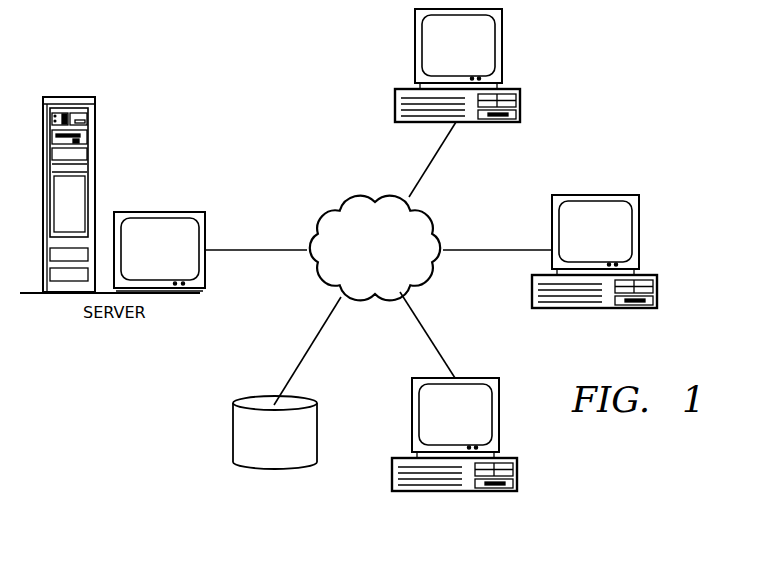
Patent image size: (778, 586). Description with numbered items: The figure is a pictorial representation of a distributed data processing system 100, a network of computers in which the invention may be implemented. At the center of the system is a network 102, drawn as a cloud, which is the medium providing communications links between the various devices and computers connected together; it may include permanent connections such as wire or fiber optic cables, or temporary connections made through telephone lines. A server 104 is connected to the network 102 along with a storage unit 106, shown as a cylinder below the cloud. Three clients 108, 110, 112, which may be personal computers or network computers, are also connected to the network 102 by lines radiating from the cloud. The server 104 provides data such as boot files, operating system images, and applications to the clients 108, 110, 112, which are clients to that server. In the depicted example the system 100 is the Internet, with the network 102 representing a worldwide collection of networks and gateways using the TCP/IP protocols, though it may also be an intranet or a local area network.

The distributed data processing system 100 is at (226, 44).
The network 102 is at (392, 258).
The server 104 is at (160, 211).
The storage unit 106 is at (233, 432).
The client 108 is at (521, 107).
The client 110 is at (598, 195).
The client 112 is at (518, 476).